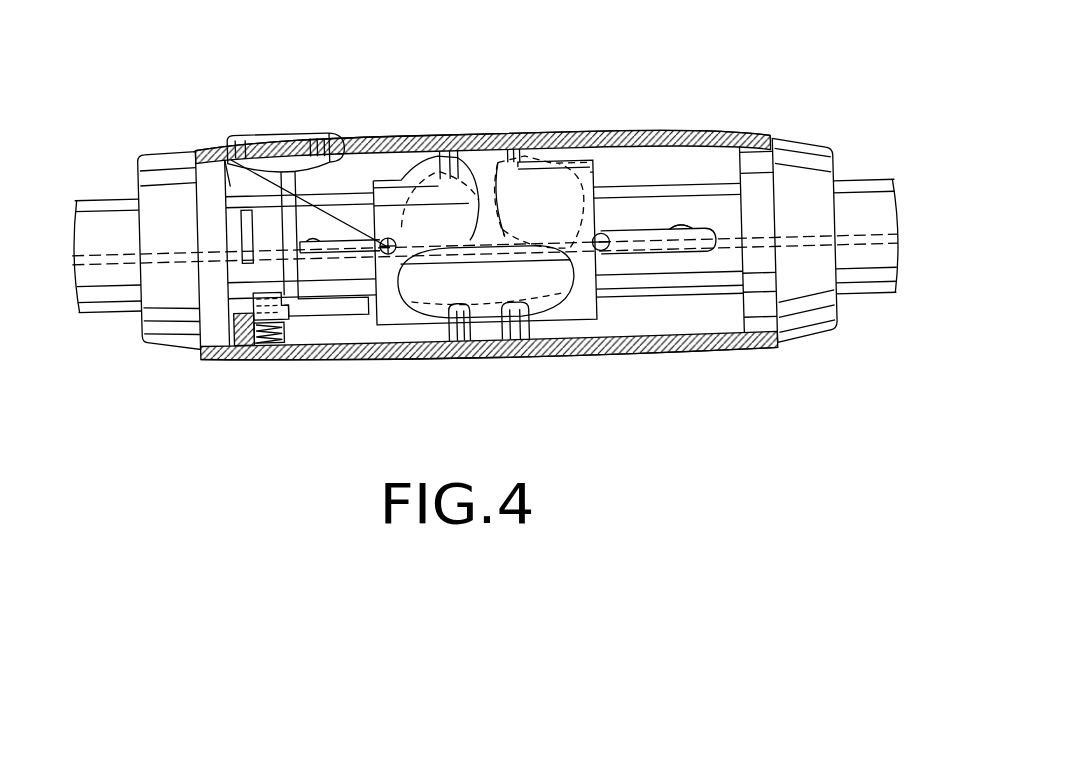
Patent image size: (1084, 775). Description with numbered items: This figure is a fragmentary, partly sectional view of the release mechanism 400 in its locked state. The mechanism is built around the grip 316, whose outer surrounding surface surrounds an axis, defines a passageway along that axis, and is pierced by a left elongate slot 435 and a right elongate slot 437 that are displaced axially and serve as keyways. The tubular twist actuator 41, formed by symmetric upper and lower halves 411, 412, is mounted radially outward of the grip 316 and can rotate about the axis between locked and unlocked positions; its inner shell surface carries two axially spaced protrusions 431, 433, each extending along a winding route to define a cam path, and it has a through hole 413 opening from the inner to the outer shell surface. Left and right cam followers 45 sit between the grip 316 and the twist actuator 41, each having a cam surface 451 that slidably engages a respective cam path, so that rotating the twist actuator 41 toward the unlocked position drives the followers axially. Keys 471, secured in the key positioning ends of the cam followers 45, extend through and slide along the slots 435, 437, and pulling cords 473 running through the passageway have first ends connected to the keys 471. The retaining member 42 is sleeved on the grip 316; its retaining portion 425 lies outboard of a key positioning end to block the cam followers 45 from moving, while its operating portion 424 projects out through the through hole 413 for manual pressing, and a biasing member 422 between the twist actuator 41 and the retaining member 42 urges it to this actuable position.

The release mechanism 400 is at (725, 100).
The twist actuator 41 is at (764, 354).
The upper half 411 is at (665, 137).
The lower half 412 is at (706, 340).
The through hole 413 is at (340, 148).
The retaining member 42 is at (268, 128).
The biasing member 422 is at (262, 343).
The operating portion 424 is at (311, 131).
The retaining portion 425 is at (347, 313).
The protrusion 431 is at (414, 145).
The protrusion 433 is at (535, 198).
The left elongate slot 435 is at (231, 160).
The right elongate slot 437 is at (677, 233).
The cam follower 45 is at (457, 380).
The cam surface 451 is at (459, 345).
The key 471 is at (386, 246).
The pulling cord 473 is at (113, 257).
The grip 316 is at (862, 283).